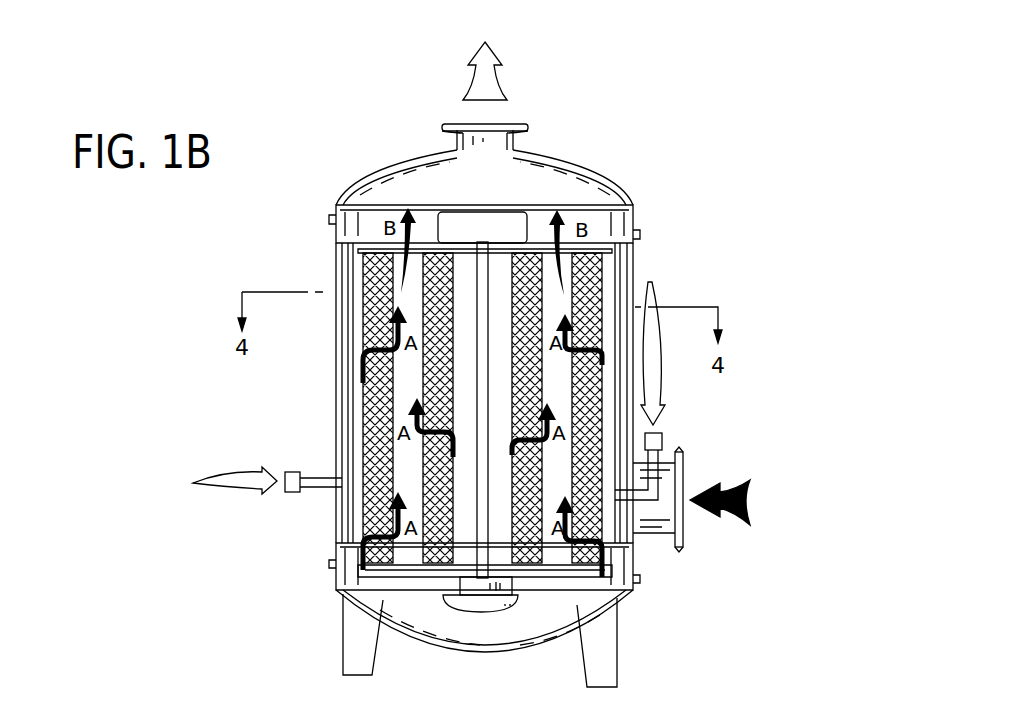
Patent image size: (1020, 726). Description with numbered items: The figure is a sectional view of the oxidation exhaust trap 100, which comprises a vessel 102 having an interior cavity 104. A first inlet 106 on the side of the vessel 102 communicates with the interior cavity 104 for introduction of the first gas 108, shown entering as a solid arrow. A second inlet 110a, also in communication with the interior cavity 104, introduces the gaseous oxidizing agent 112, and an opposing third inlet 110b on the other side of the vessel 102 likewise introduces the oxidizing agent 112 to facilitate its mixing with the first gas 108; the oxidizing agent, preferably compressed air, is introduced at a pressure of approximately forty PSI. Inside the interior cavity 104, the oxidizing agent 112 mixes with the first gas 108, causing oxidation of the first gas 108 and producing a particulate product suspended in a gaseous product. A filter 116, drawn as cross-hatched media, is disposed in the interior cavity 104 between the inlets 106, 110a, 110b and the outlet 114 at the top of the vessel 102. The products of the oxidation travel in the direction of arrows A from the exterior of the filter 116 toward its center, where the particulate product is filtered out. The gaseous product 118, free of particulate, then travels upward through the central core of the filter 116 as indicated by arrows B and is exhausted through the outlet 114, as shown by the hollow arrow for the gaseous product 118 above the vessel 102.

The oxidation exhaust trap 100 is at (538, 393).
The vessel 102 is at (334, 276).
The interior cavity 104 is at (465, 353).
The first inlet 106 is at (683, 528).
The first gas 108 is at (752, 505).
The second inlet 110a is at (661, 442).
The third inlet 110b is at (295, 493).
The gaseous oxidizing agent 112 is at (222, 475).
The outlet 114 is at (510, 127).
The filter 116 is at (587, 288).
The gaseous product 118 is at (496, 84).